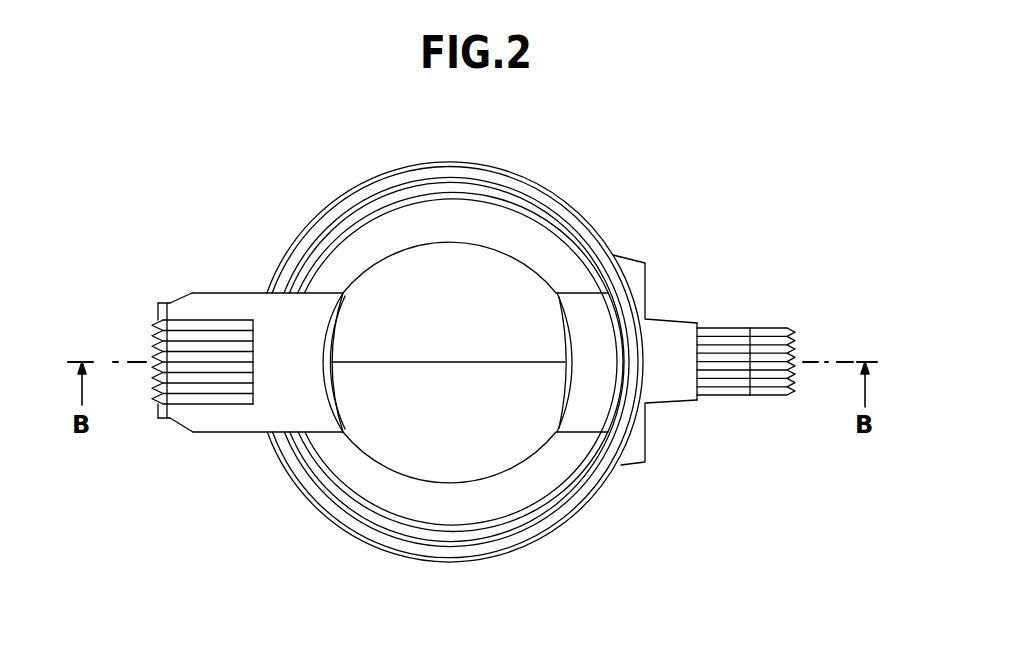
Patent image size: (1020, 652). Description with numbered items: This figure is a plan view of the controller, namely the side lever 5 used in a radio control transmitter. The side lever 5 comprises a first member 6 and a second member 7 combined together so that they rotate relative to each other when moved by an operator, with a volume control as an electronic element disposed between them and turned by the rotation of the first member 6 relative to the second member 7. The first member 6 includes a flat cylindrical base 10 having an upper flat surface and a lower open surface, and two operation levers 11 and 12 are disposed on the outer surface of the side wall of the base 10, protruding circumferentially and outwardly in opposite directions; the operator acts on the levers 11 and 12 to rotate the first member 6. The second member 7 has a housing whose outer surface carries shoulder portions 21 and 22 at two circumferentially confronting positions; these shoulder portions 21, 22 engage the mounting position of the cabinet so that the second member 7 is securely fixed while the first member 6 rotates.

The side lever 5 is at (486, 362).
The first member 6 is at (455, 457).
The second member 7 is at (632, 416).
The shoulder portion 22 is at (630, 468).
The flat cylindrical base 10 is at (402, 505).
The operation lever 11 is at (198, 420).
The operation lever 12 is at (752, 380).
The shoulder portion 21 is at (228, 433).